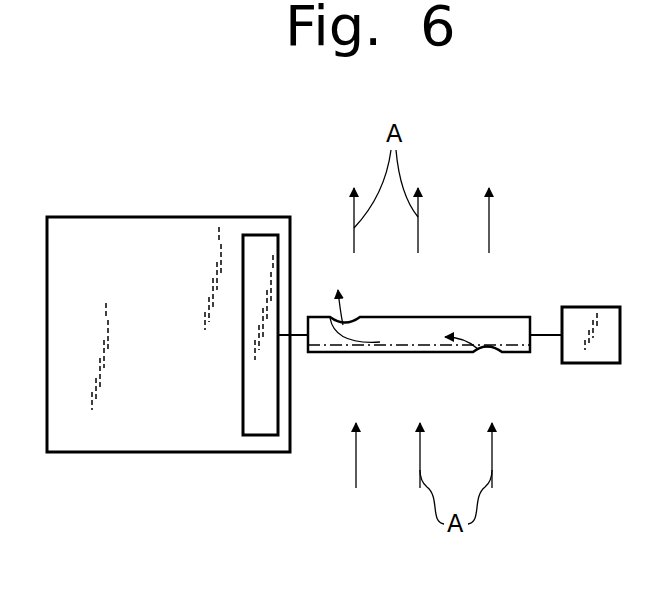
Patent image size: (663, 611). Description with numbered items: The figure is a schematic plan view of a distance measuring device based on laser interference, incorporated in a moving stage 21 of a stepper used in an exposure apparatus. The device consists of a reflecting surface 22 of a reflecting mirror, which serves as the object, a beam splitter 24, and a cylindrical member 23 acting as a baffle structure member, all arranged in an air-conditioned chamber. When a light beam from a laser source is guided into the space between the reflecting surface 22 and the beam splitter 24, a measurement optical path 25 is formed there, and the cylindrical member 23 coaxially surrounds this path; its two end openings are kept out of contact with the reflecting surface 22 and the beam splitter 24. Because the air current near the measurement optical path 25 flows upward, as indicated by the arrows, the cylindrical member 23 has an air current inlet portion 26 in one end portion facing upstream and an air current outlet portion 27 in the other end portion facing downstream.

The moving stage 21 is at (107, 440).
The reflecting surface 22 is at (275, 258).
The cylindrical member 23 is at (505, 318).
The beam splitter 24 is at (595, 307).
The measurement optical path 25 is at (300, 338).
The air current inlet portion 26 is at (493, 354).
The air current outlet portion 27 is at (348, 317).